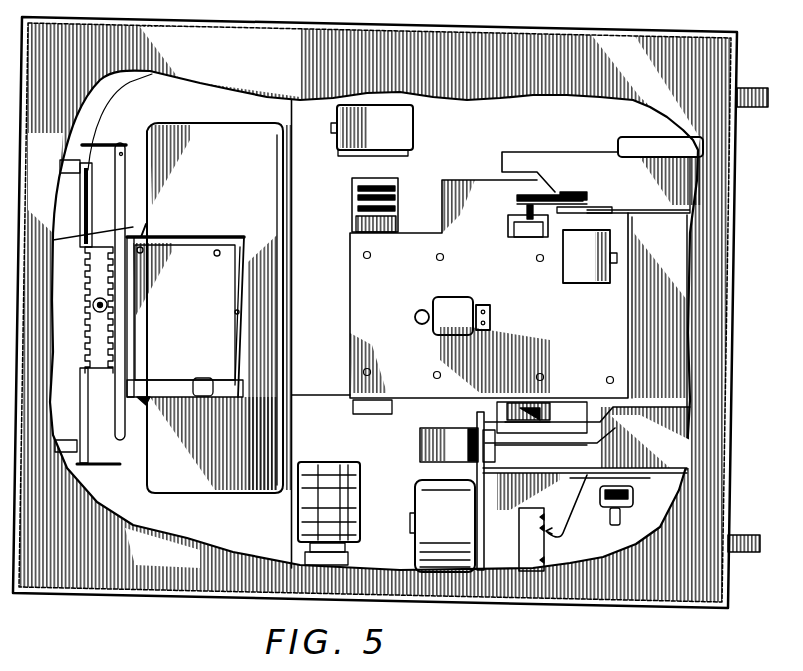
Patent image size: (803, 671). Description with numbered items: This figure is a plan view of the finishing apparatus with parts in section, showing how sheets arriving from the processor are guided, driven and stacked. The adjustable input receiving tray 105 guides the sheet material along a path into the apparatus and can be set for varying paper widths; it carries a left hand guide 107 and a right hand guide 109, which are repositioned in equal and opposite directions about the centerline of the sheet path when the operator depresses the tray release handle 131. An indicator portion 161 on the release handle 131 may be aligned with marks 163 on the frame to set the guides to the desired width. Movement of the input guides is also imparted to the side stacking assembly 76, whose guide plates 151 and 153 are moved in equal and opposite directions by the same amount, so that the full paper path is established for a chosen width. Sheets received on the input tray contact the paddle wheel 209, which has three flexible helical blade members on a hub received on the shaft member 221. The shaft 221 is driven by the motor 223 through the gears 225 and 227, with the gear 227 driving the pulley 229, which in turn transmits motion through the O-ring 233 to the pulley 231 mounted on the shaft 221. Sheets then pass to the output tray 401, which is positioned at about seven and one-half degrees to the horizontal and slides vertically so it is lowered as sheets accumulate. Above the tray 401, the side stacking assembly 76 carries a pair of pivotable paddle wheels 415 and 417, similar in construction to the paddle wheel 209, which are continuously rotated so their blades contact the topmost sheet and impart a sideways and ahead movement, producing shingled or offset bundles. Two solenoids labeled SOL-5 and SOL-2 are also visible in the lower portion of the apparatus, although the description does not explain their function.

The side stacking assembly 76 is at (191, 225).
The adjustable input receiving tray 105 is at (677, 265).
The left hand guide 107 is at (682, 437).
The right hand guide 109 is at (595, 161).
The tray release handle 131 is at (600, 506).
The guide plate 151 is at (100, 469).
The guide plate 153 is at (93, 147).
The indicator portion 161 is at (558, 537).
The marks 163 is at (520, 556).
The paddle wheel 209 is at (592, 437).
The shaft member 221 is at (541, 402).
The motor 223 is at (578, 268).
The gear 225 is at (617, 213).
The gear 227 is at (569, 213).
The pulley 229 is at (578, 190).
The pulley 231 is at (517, 197).
The O-ring 233 is at (520, 206).
The tray 401 is at (190, 494).
The paddle wheel 415 is at (154, 417).
The paddle wheel 417 is at (185, 209).
The solenoid SOL-2 is at (415, 500).
The solenoid SOL-5 is at (320, 476).